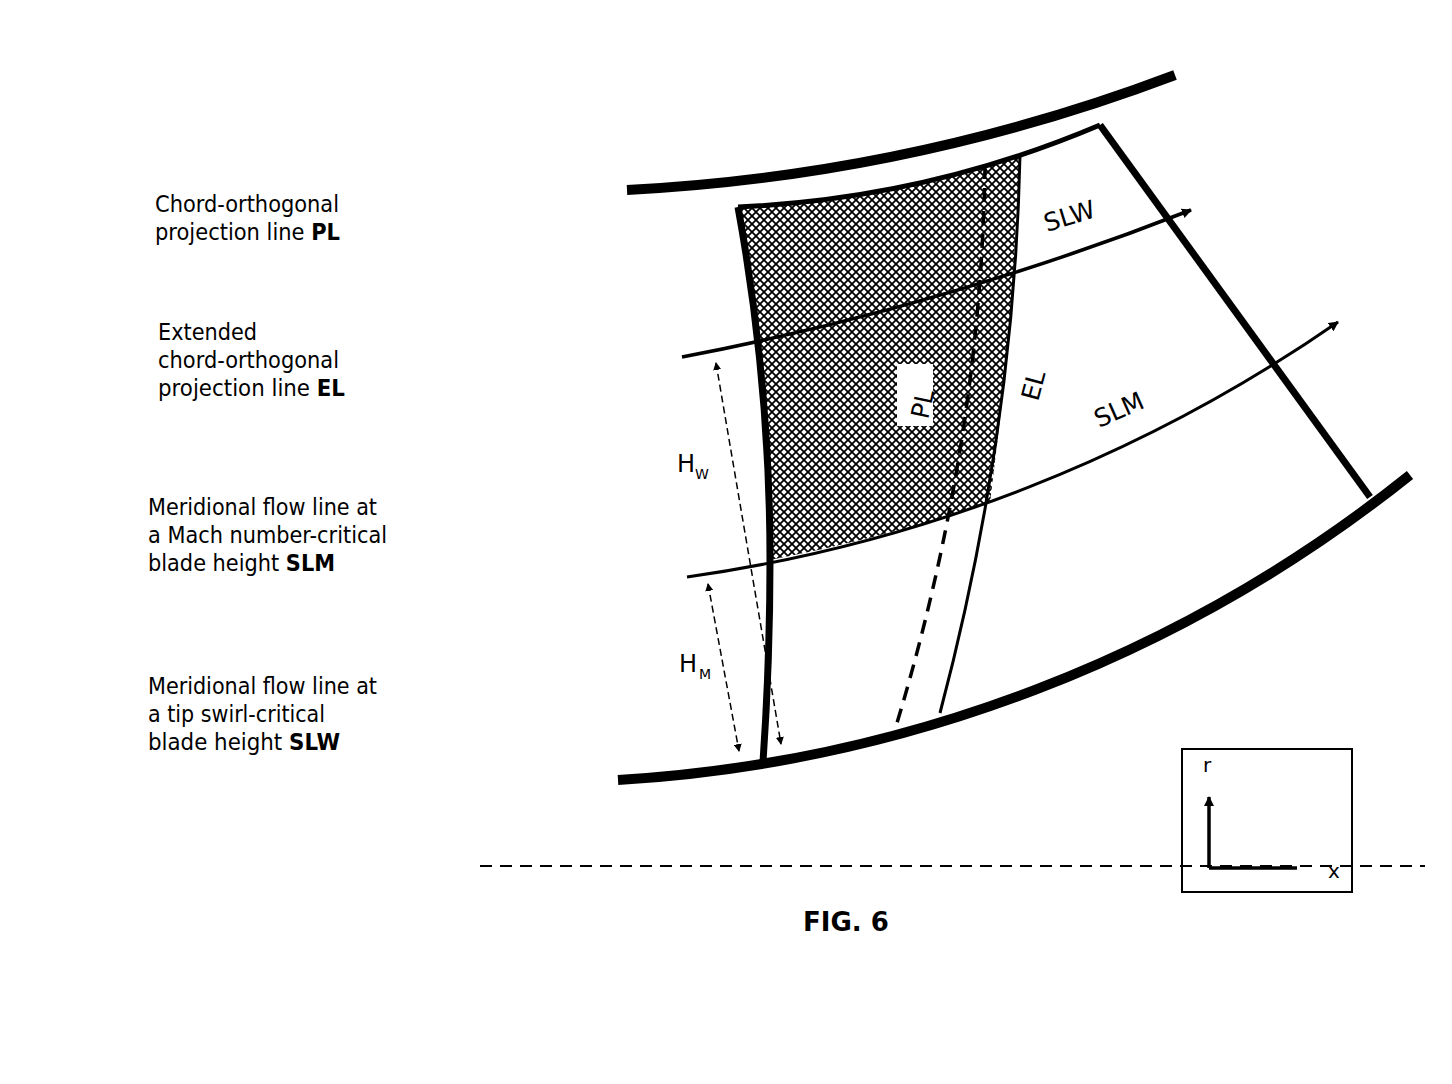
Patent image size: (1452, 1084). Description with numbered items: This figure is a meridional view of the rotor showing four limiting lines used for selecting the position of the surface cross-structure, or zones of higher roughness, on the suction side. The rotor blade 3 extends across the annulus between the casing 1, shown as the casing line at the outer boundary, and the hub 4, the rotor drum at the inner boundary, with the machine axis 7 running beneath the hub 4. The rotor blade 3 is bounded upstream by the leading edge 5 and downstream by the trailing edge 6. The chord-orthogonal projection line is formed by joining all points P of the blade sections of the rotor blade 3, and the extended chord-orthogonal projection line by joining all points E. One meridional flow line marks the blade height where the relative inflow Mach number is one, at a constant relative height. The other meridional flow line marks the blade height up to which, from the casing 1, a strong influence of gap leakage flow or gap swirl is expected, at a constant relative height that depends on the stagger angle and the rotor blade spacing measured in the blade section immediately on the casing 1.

The casing 1 is at (752, 178).
The rotor blade 3 is at (1142, 578).
The hub 4 is at (710, 779).
The leading edge 5 is at (775, 612).
The trailing edge 6 is at (1259, 328).
The machine axis 7 is at (968, 869).